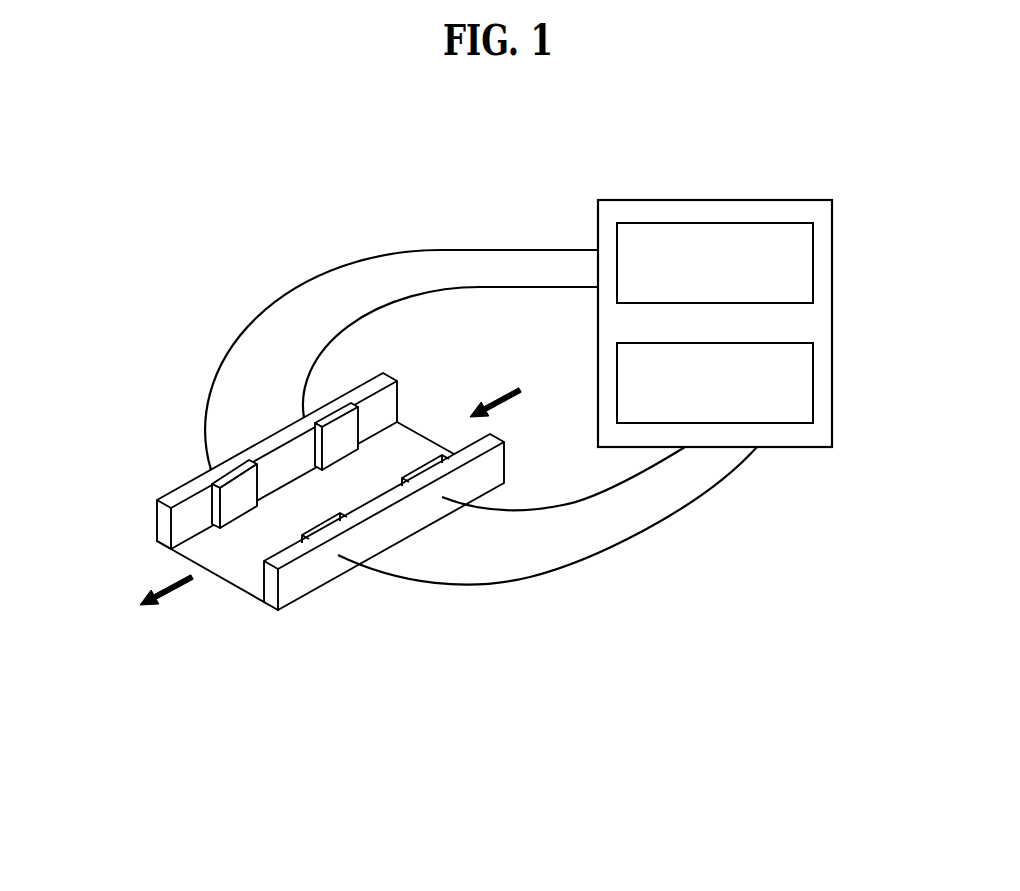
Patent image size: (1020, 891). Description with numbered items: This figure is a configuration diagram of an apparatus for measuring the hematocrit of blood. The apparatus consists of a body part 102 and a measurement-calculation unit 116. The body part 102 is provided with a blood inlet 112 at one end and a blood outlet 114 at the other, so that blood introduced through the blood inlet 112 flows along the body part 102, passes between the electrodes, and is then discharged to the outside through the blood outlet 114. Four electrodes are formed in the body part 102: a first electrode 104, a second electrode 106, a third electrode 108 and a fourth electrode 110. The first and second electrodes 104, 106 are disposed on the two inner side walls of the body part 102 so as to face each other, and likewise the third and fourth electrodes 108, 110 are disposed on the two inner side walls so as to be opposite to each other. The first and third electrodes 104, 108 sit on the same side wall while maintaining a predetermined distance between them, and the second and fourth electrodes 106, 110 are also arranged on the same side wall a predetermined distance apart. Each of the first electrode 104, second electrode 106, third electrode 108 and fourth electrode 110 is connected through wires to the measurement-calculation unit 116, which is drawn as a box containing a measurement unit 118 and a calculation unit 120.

The body part 102 is at (175, 487).
The first electrode 104 is at (333, 440).
The second electrode 106 is at (420, 477).
The third electrode 108 is at (228, 498).
The fourth electrode 110 is at (313, 530).
The blood inlet 112 is at (442, 408).
The blood outlet 114 is at (230, 562).
The measurement-calculation unit 116 is at (751, 287).
The measurement unit 118 is at (815, 277).
The calculation unit 120 is at (815, 370).